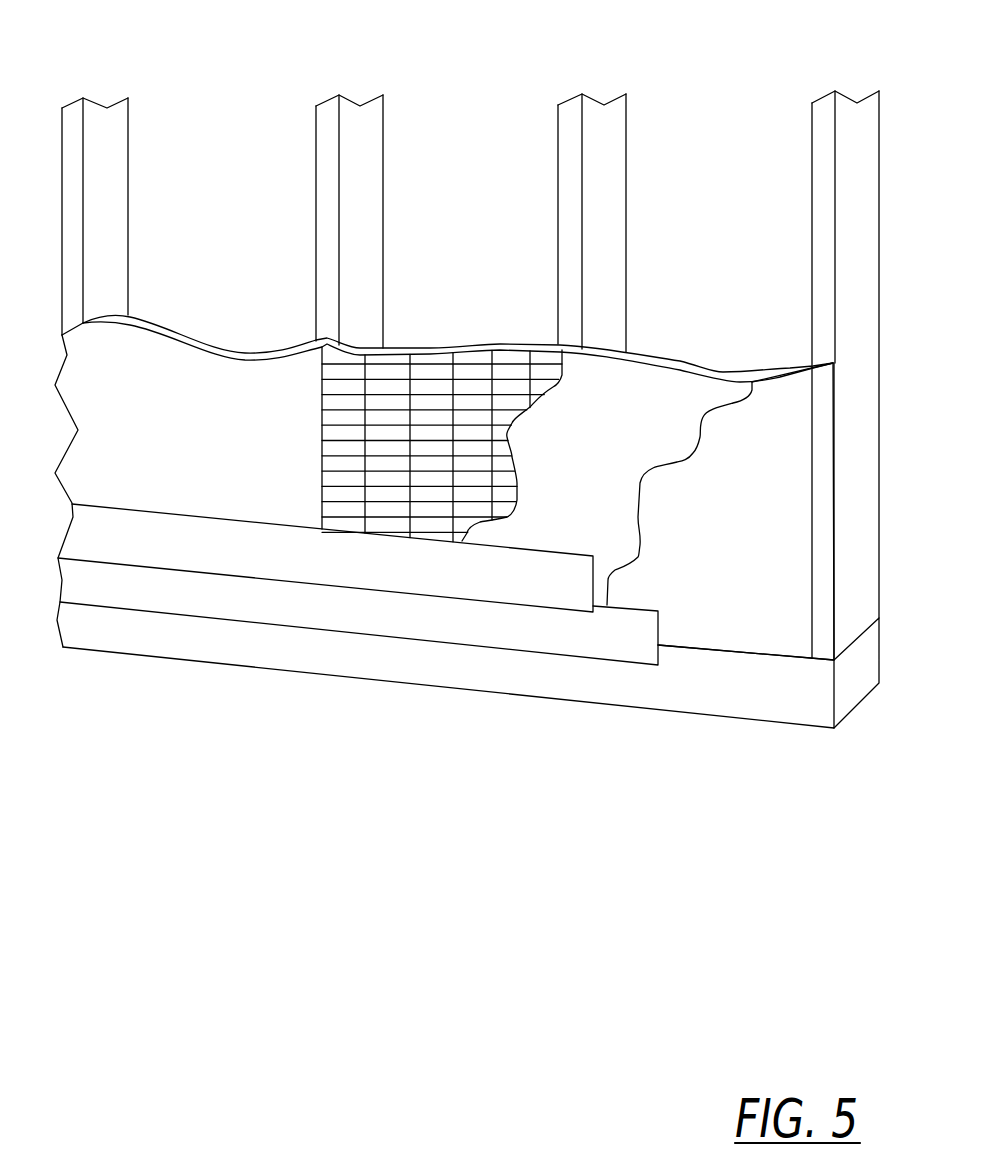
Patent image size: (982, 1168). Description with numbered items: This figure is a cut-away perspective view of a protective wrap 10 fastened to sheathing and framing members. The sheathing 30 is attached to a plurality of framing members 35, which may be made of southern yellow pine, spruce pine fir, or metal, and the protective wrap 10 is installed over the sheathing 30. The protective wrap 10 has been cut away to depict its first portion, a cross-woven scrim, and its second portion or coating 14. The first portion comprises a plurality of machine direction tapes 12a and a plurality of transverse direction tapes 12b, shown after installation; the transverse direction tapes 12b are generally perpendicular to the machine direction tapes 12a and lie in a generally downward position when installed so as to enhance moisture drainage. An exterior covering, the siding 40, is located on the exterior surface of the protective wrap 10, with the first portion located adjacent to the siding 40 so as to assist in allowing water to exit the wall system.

The protective wrap 10 is at (525, 336).
The machine direction tapes 12a is at (432, 378).
The transverse direction tapes 12b is at (492, 367).
The coating 14 is at (600, 476).
The sheathing 30 is at (742, 543).
The framing members 35 is at (117, 100).
The siding 40 is at (225, 558).